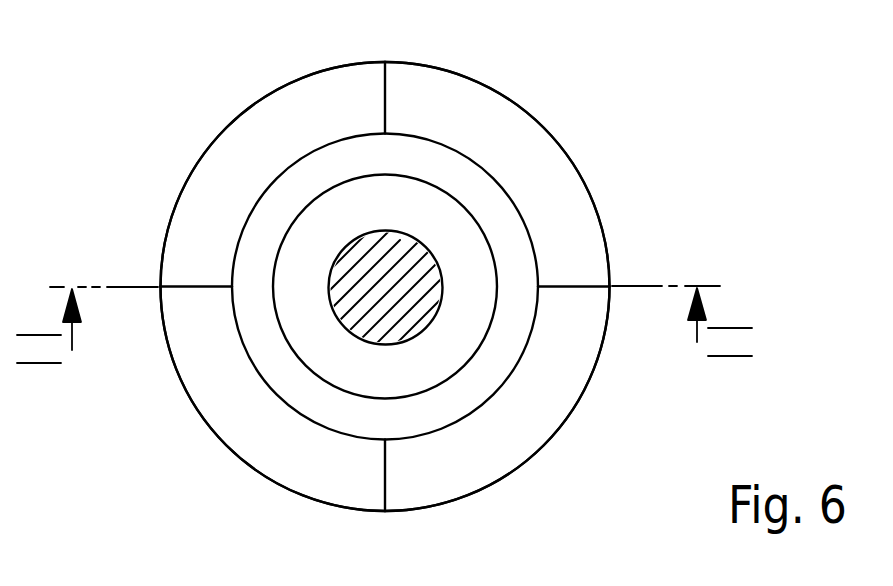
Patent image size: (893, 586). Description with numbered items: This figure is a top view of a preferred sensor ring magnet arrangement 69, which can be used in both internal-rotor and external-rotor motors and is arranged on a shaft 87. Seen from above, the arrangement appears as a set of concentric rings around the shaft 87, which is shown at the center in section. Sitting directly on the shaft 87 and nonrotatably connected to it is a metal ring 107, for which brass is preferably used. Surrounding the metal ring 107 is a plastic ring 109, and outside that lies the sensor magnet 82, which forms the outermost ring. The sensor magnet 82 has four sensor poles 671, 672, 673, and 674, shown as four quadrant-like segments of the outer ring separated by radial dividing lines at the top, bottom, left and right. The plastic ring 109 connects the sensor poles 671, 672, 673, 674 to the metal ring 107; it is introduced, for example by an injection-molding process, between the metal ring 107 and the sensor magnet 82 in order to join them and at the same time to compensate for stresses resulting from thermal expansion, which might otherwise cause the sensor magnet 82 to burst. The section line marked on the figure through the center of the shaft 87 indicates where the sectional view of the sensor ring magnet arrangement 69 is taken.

The sensor ring magnet arrangement 69 is at (146, 207).
The sensor magnet 82 is at (222, 157).
The sensor pole 674 is at (290, 103).
The sensor pole 671 is at (478, 103).
The sensor pole 672 is at (548, 400).
The sensor pole 673 is at (223, 402).
The plastic ring 109 is at (462, 178).
The metal ring 107 is at (457, 225).
The shaft 87 is at (408, 285).